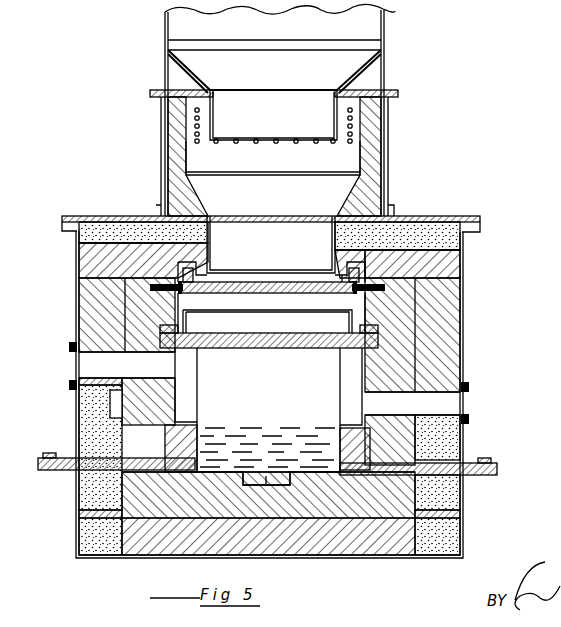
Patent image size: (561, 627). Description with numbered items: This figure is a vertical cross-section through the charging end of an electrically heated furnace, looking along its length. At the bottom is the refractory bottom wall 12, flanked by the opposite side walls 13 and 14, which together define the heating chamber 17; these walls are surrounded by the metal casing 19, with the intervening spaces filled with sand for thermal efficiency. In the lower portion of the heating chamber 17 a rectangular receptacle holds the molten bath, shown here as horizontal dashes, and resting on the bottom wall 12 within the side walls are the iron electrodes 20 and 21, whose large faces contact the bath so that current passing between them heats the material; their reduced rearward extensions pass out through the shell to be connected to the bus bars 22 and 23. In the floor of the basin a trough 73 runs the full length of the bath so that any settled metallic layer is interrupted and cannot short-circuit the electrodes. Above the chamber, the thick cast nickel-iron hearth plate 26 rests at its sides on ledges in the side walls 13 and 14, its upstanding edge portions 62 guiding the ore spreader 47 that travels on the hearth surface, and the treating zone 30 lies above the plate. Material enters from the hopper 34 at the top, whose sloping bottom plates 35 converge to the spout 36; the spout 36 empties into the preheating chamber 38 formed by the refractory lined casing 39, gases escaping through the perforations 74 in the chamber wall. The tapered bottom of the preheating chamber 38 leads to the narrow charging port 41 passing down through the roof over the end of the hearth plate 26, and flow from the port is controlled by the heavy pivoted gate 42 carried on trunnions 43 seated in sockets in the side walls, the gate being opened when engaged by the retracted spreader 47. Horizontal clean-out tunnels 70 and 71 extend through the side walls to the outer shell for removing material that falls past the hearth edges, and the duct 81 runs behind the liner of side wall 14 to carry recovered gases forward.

The bottom wall 12 is at (393, 510).
The side wall 13 is at (450, 334).
The side wall 14 is at (90, 326).
The heating chamber 17 is at (272, 424).
The metal casing 19 is at (465, 372).
The electrode 20 is at (340, 452).
The electrode 21 is at (210, 433).
The bus bar 22 is at (488, 458).
The bus bar 23 is at (52, 453).
The hearth plate 26 is at (283, 352).
The treating zone 30 is at (282, 315).
The hopper 34 is at (376, 26).
The bottom plate 35 is at (368, 62).
The spout 36 is at (385, 104).
The preheating chamber 38 is at (272, 199).
The casing 39 is at (164, 193).
The charging port 41 is at (305, 273).
The pivoted gate 42 is at (340, 296).
The trunnion 43 is at (150, 288).
The ore spreader 47 is at (235, 297).
The upstanding edge portion 62 is at (186, 330).
The clean-out tunnel 70 is at (456, 403).
The clean-out tunnel 71 is at (90, 368).
The trough 73 is at (266, 468).
The perforation 74 is at (250, 145).
The duct 81 is at (78, 406).